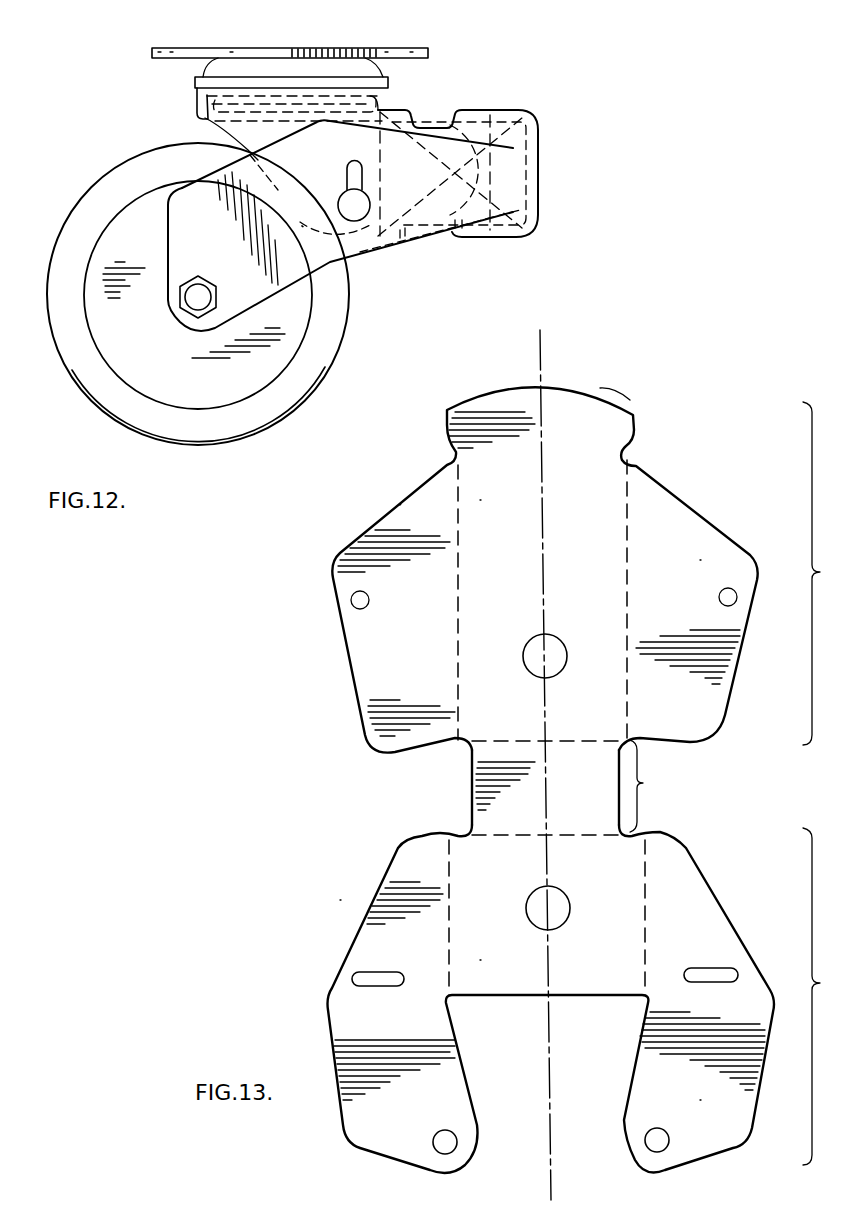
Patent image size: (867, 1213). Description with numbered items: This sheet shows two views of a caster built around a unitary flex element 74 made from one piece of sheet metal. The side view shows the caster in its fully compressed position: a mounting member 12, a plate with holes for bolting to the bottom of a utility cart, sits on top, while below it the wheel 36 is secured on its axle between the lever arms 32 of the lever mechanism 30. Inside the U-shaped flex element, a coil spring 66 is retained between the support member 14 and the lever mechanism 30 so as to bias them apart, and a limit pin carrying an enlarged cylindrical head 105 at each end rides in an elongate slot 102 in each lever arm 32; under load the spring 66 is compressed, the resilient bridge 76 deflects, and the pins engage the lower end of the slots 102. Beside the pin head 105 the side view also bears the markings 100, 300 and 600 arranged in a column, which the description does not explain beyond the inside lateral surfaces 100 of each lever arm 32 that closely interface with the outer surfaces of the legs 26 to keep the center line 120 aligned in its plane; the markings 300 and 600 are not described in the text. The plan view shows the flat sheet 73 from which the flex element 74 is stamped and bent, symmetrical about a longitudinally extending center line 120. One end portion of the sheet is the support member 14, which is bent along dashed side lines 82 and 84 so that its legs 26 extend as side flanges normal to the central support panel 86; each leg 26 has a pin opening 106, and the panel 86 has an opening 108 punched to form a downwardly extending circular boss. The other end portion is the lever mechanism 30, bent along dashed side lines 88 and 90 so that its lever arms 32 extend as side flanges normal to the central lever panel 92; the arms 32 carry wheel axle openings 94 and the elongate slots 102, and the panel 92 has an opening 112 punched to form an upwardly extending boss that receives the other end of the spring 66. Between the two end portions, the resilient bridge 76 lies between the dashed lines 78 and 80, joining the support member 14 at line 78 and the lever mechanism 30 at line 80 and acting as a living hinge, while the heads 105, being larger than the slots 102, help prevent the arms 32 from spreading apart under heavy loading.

In FIG. 12, the mounting member 12 is at (390, 48).
In FIG. 12, the coil spring 66 is at (470, 118).
In FIG. 12, the resilient bridge 76 is at (540, 148).
In FIG. 13, the resilient bridge 76 is at (574, 786).
In FIG. 12, the wheel 36 is at (95, 195).
In FIG. 12, the lever arms 32 is at (222, 244).
In FIG. 13, the lever arms 32 is at (366, 891).
In FIG. 12, the inside lateral surfaces 100 is at (332, 162).
In FIG. 12, the load position marker 300 is at (332, 182).
In FIG. 12, the load position marker 600 is at (332, 202).
In FIG. 12, the enlarged cylindrical head 105 is at (357, 213).
In FIG. 13, the center line 120 is at (548, 340).
In FIG. 13, the flat sheet 73 is at (647, 406).
In FIG. 13, the unitary flex element 74 is at (362, 516).
In FIG. 13, the legs 26 is at (706, 548).
In FIG. 13, the support member 14 is at (593, 569).
In FIG. 13, the dashed side line 82 is at (468, 592).
In FIG. 13, the dashed side line 84 is at (622, 546).
In FIG. 13, the central support panel 86 is at (577, 536).
In FIG. 13, the pin opening 106 is at (357, 607).
In FIG. 13, the opening 108 is at (551, 650).
In FIG. 13, the dashed line 78 is at (586, 740).
In FIG. 13, the dashed line 80 is at (572, 836).
In FIG. 13, the dashed side line 88 is at (451, 928).
In FIG. 13, the dashed side line 90 is at (644, 912).
In FIG. 13, the central lever panel 92 is at (592, 967).
In FIG. 13, the opening 112 is at (535, 903).
In FIG. 13, the elongate slot 102 is at (368, 975).
In FIG. 13, the wheel axle openings 94 is at (451, 1145).
In FIG. 13, the lever mechanism 30 is at (591, 999).